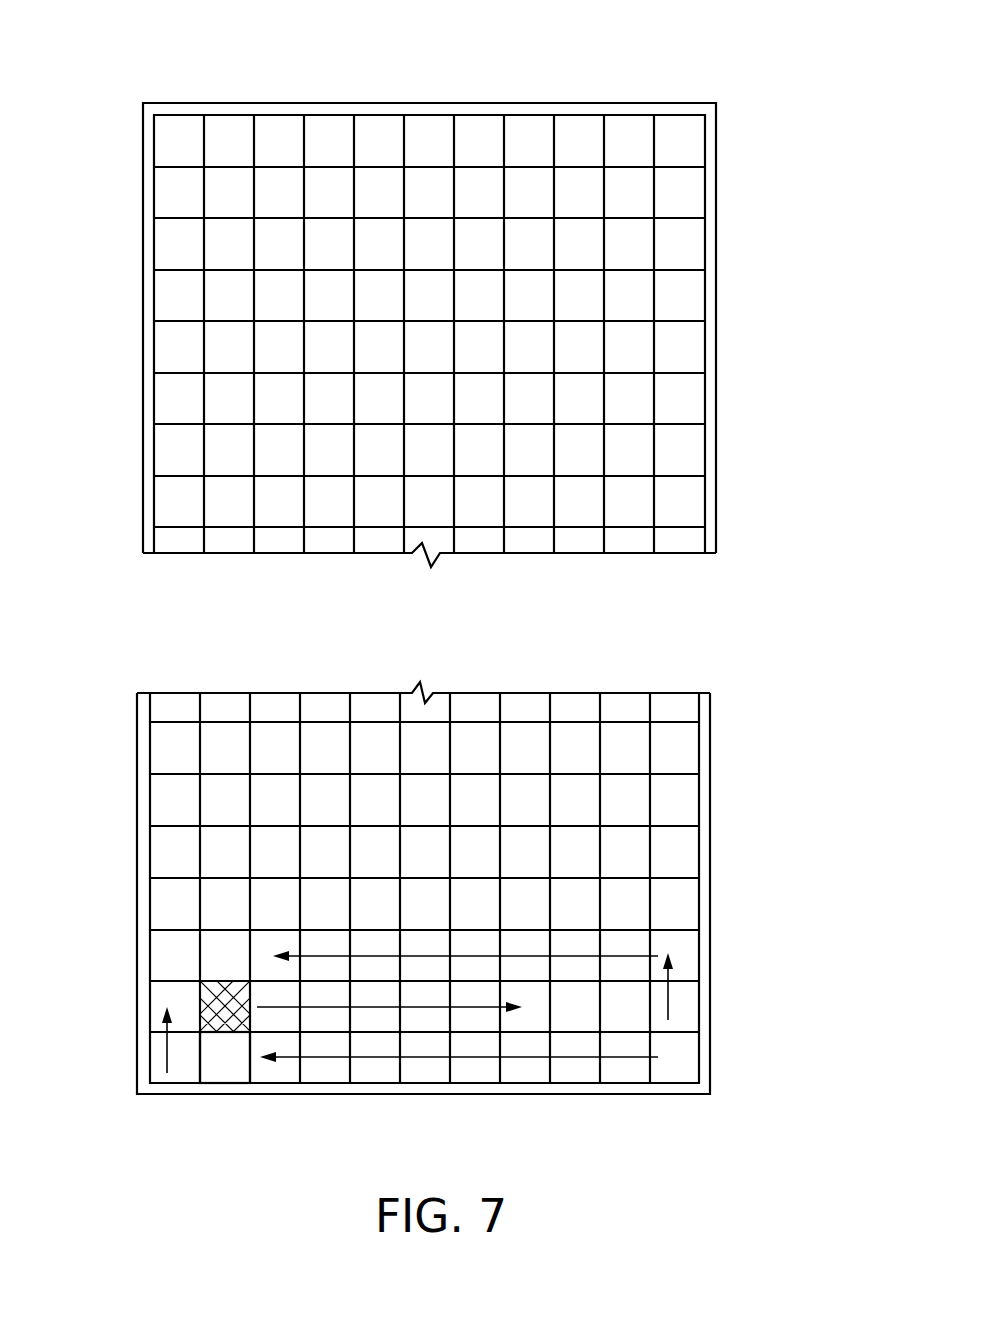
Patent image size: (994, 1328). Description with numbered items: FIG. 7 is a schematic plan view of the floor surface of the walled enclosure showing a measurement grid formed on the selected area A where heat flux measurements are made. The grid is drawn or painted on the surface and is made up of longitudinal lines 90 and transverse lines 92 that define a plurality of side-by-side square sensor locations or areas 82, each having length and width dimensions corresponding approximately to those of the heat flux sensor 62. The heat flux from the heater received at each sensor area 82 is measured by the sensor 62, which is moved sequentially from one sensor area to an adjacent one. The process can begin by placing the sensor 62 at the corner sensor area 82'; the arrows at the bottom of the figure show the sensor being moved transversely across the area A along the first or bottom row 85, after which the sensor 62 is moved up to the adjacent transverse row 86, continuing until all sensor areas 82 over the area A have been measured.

The sensor location or area 82 is at (469, 335).
The corner sensor area 82' is at (477, 919).
The longitudinal lines 90 is at (657, 353).
The transverse lines 92 is at (476, 218).
The selected measurement area A is at (473, 752).
The heat flux sensor 62 is at (203, 997).
The first or bottom row 85 is at (220, 1058).
The adjacent transverse row 86 is at (620, 1006).